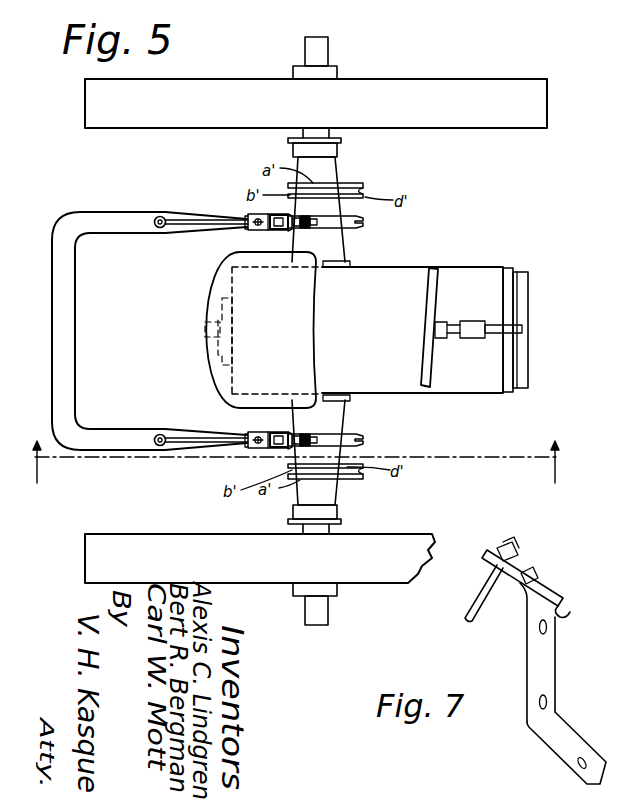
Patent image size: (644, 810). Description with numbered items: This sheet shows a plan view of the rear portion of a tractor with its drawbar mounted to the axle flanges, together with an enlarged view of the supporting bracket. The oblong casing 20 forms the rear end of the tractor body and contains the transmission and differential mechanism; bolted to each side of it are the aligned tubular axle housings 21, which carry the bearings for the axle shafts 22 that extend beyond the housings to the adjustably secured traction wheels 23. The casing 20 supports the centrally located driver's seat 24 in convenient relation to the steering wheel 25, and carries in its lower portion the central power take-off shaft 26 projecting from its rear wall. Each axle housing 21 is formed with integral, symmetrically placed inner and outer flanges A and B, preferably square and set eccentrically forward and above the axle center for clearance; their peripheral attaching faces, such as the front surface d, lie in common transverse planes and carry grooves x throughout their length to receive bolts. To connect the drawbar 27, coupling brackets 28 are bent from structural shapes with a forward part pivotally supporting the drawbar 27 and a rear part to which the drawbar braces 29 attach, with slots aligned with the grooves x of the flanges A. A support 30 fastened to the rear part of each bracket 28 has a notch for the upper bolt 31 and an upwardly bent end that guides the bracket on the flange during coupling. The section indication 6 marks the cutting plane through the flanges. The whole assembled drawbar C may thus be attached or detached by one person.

In FIG. 5, the oblong casing 20 is at (495, 387).
In FIG. 5, the tubular axle housings 21 is at (332, 165).
In FIG. 5, the axle shafts 22 is at (322, 43).
In FIG. 5, the traction wheels 23 is at (352, 82).
In FIG. 5, the driver's seat 24 is at (222, 282).
In FIG. 5, the steering wheel 25 is at (428, 387).
In FIG. 5, the power take-off shaft 26 is at (218, 313).
In FIG. 5, the drawbar 27 is at (85, 213).
In FIG. 5, the coupling brackets 28 is at (248, 213).
In FIG. 7, the coupling brackets 28 is at (537, 648).
In FIG. 5, the drawbar braces 29 is at (200, 197).
In FIG. 7, the drawbar braces 29 is at (478, 592).
In FIG. 5, the support 30 is at (290, 230).
In FIG. 7, the support 30 is at (565, 603).
In FIG. 5, the upper bolt 31 is at (312, 229).
In FIG. 5, the section line 6- 6 is at (296, 463).
In FIG. 5, the inner flange A is at (343, 225).
In FIG. 5, the outer flange B is at (347, 183).
In FIG. 5, the assembled drawbar C is at (80, 317).
In FIG. 5, the grooves x is at (290, 186).
In FIG. 5, the front attaching surface d is at (370, 223).